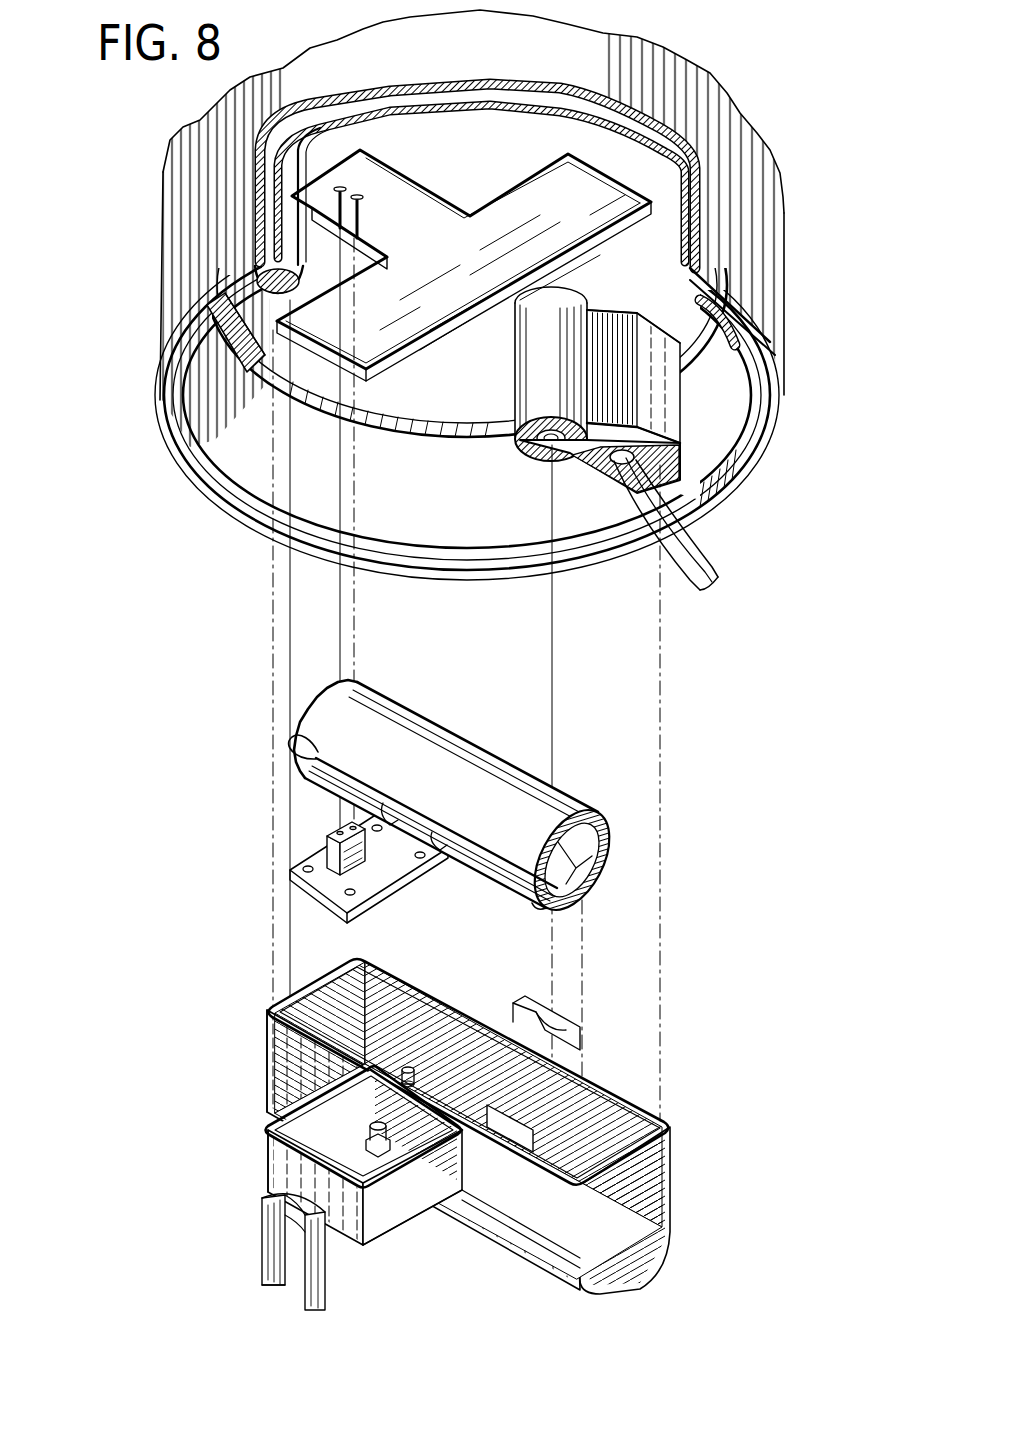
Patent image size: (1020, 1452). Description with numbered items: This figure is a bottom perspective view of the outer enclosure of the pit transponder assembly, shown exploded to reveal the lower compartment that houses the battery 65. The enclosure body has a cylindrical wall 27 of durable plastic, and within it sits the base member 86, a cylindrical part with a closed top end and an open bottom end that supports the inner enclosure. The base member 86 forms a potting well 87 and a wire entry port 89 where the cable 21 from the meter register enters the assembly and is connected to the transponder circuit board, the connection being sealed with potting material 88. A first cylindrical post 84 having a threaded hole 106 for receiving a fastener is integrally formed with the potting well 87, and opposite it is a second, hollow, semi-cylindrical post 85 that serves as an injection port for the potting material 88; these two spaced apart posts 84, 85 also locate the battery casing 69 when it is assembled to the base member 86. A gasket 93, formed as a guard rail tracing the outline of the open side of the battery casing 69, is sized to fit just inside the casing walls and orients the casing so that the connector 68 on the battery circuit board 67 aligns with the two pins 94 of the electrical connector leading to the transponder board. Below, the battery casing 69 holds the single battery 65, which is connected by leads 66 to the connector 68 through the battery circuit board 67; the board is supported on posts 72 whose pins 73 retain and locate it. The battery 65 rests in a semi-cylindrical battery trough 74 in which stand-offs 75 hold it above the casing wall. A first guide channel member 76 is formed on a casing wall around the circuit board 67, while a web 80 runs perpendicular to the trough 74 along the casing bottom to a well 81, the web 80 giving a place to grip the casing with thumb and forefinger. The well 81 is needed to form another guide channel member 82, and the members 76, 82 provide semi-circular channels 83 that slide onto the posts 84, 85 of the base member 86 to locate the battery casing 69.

The cable 21 is at (703, 553).
The cylindrical wall 27 is at (185, 277).
The battery 65 is at (500, 760).
The leads 66 is at (517, 893).
The battery circuit board 67 is at (387, 893).
The connector 68 is at (327, 840).
The battery casing member 69 is at (686, 1160).
The posts 72 is at (380, 1150).
The pins 73 is at (370, 1130).
The semi-cylindrical battery trough 74 is at (268, 1010).
The stand-offs 75 is at (408, 1078).
The first guide channel member 76 is at (268, 1218).
The web 80 is at (337, 1263).
The well 81 is at (520, 1137).
The guide channel member 82 is at (580, 1042).
The semi-circular channels 83 is at (278, 1252).
The first cylindrical post 84 is at (545, 392).
The second semi-cylindrical post 85 is at (293, 193).
The base member 86 is at (217, 402).
The potting well 87 is at (687, 430).
The potting material 88 is at (228, 328).
The wire entry port 89 is at (667, 493).
The gasket 93 is at (439, 323).
The pins 94 is at (362, 212).
The threaded hole 106 is at (553, 440).